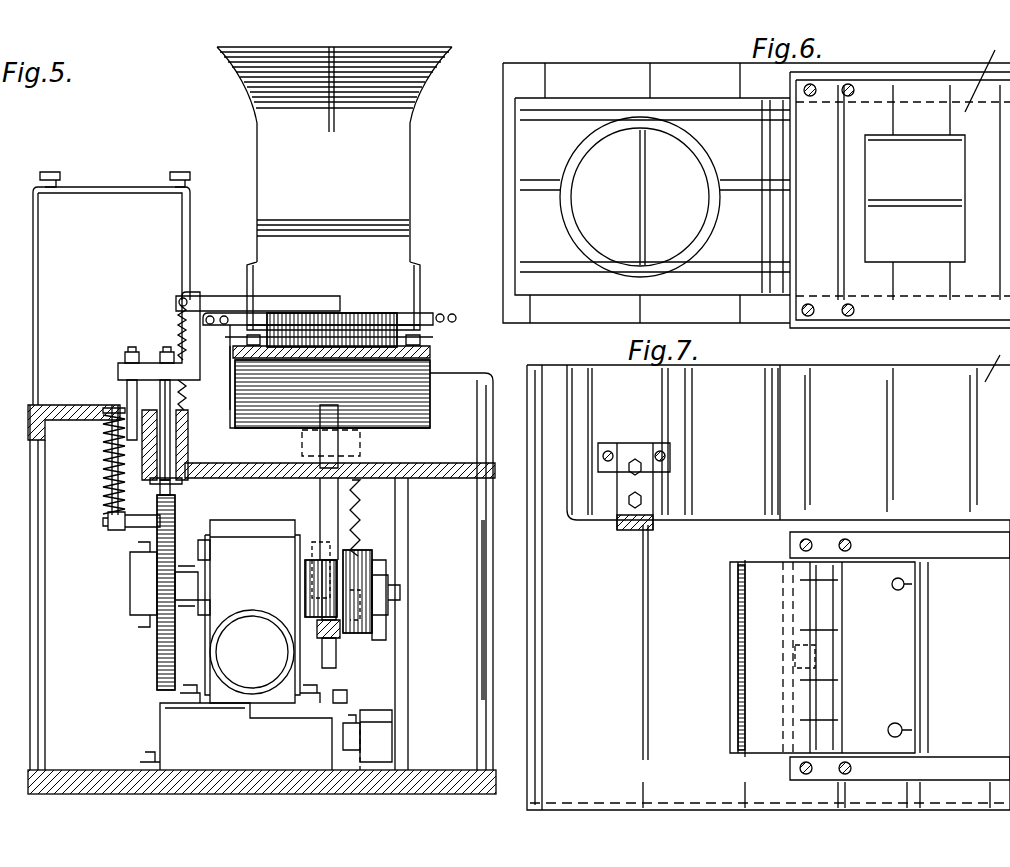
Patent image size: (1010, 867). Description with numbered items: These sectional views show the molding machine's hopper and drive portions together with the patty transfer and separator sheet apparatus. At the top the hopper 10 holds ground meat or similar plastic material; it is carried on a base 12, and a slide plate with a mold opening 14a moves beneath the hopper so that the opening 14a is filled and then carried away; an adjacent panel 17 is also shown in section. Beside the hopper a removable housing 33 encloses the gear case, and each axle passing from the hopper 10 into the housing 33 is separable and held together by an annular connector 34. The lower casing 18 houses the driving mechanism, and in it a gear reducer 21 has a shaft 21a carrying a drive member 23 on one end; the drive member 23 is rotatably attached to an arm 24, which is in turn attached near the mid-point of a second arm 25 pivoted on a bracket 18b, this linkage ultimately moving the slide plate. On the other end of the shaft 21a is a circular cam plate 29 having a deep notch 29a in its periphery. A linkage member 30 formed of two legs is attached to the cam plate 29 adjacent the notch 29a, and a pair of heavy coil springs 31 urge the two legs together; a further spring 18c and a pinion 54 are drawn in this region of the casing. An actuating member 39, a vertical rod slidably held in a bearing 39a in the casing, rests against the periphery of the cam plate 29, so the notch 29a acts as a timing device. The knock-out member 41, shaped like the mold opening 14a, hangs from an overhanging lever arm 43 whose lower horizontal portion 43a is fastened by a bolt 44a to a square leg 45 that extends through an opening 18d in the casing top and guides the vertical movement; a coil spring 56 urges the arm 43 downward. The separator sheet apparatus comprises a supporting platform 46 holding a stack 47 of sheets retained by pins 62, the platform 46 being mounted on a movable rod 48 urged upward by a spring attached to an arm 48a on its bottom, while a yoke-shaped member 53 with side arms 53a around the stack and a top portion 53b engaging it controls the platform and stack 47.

In FIG. 5, the hopper 10 is at (262, 105).
In FIG. 6, the hopper 10 is at (955, 183).
In FIG. 7, the base 12 is at (990, 590).
In FIG. 6, the mold opening 14a is at (612, 148).
In FIG. 6, the panel 17 is at (540, 157).
In FIG. 5, the casing 18 is at (32, 428).
In FIG. 5, the bracket 18b is at (392, 720).
In FIG. 5, the spring 18c is at (104, 458).
In FIG. 5, the opening 18d is at (100, 418).
In FIG. 5, the gear reducer 21 is at (236, 645).
In FIG. 5, the gear reducer shaft 21a is at (200, 558).
In FIG. 5, the drive member 23 is at (355, 630).
In FIG. 5, the arm 24 is at (375, 590).
In FIG. 5, the second arm 25 is at (409, 548).
In FIG. 5, the cam plate 29 is at (157, 662).
In FIG. 5, the notch 29a is at (172, 506).
In FIG. 5, the linkage member 30 is at (108, 517).
In FIG. 5, the coil springs 31 is at (103, 491).
In FIG. 5, the housing 33 is at (106, 193).
In FIG. 5, the annular connector 34 is at (222, 275).
In FIG. 5, the actuating member 39 is at (170, 425).
In FIG. 5, the bearing 39a is at (172, 465).
In FIG. 5, the knock-out member 41 is at (420, 312).
In FIG. 5, the lever arm 43 is at (290, 296).
In FIG. 7, the lever arm 43 is at (640, 530).
In FIG. 5, the horizontal portion 43a is at (155, 362).
In FIG. 7, the horizontal portion 43a is at (620, 488).
In FIG. 5, the bolt 44a is at (124, 352).
In FIG. 7, the bolt 44a is at (638, 460).
In FIG. 5, the leg 45 is at (127, 388).
In FIG. 5, the supporting platform 46 is at (296, 412).
In FIG. 7, the supporting platform 46 is at (732, 598).
In FIG. 5, the stack 47 is at (428, 362).
In FIG. 7, the stack 47 is at (748, 710).
In FIG. 5, the movable rod 48 is at (342, 418).
In FIG. 7, the movable rod 48 is at (795, 655).
In FIG. 5, the arm 48a is at (390, 628).
In FIG. 5, the yoke-shaped member 53 is at (398, 420).
In FIG. 5, the side arms 53a is at (430, 395).
In FIG. 7, the top portion 53b is at (834, 612).
In FIG. 5, the pinion 54 is at (345, 645).
In FIG. 5, the coil spring 56 is at (180, 306).
In FIG. 7, the pins 62 is at (905, 582).